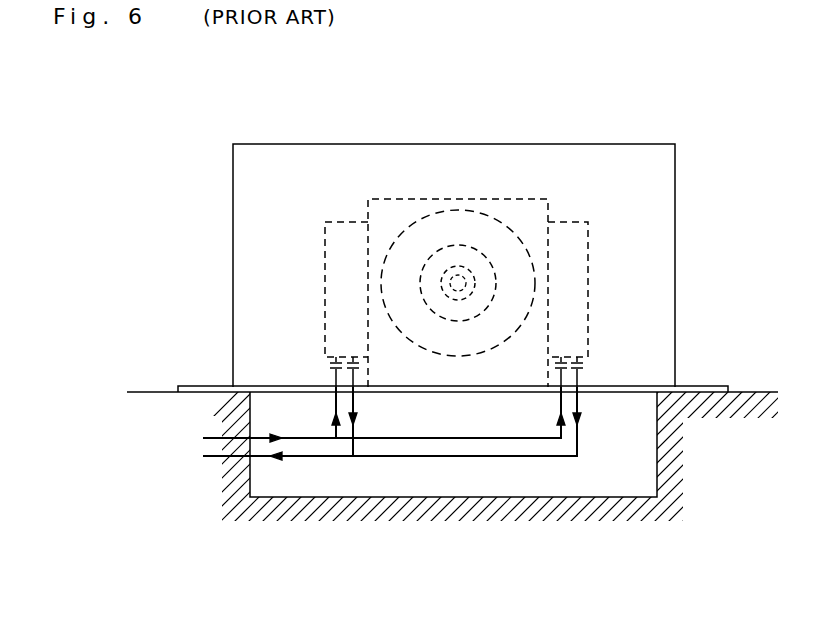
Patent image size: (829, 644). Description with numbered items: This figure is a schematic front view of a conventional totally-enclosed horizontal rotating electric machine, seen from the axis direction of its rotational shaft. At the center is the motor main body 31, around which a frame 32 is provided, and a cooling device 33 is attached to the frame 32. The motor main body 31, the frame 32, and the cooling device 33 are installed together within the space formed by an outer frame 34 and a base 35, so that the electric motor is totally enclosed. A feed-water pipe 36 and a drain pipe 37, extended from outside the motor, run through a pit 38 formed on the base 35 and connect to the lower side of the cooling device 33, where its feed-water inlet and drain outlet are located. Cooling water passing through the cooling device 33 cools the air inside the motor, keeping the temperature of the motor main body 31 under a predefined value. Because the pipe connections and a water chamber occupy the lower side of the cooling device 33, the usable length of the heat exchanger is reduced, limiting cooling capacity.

The motor main body 31 is at (474, 212).
The frame 32 is at (410, 200).
The cooling device 33 is at (582, 222).
The outer frame 34 is at (308, 145).
The base 35 is at (687, 387).
The feed-water pipe 36 is at (506, 438).
The drain pipe 37 is at (440, 456).
The pit 38 is at (349, 485).